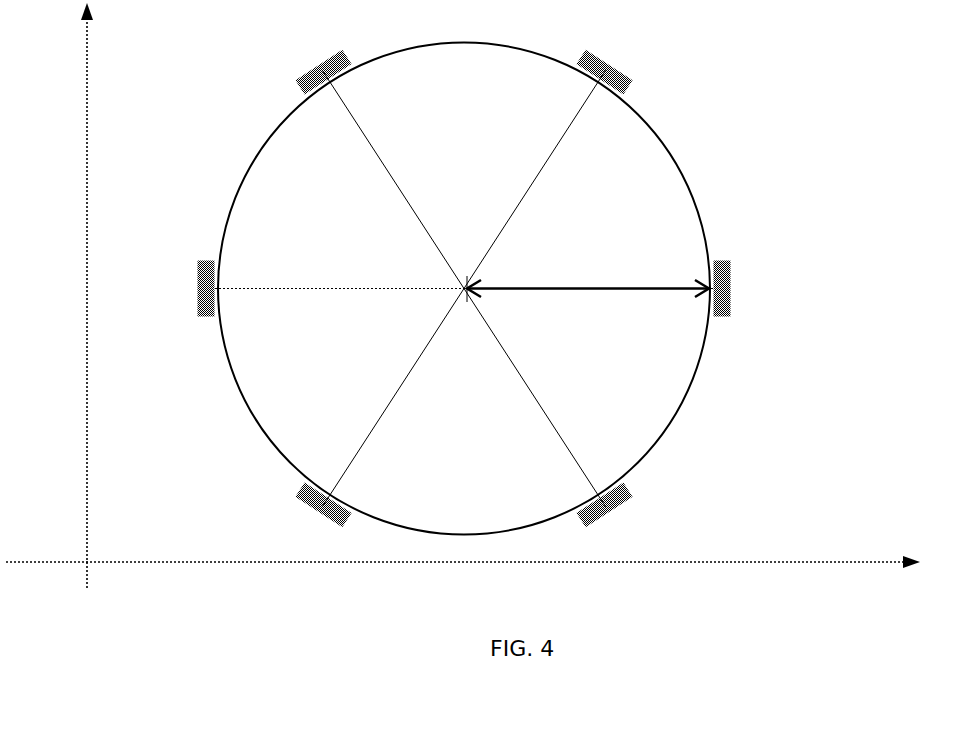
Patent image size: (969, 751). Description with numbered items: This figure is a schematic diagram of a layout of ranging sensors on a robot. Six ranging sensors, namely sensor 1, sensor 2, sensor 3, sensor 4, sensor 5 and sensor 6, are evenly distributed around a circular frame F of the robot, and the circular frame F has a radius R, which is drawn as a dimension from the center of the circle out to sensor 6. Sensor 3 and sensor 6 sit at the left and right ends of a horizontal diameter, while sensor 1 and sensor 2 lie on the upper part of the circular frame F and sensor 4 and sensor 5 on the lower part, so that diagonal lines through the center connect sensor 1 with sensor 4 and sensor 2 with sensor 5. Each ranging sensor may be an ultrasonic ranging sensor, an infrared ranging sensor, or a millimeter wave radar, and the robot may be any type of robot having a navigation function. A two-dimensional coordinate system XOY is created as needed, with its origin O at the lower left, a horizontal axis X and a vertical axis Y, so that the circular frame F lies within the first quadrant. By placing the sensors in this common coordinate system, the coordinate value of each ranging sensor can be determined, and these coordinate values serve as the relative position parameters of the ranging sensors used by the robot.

The ranging sensor 1 is at (609, 65).
The ranging sensor 2 is at (319, 65).
The ranging sensor 3 is at (198, 288).
The ranging sensor 4 is at (319, 512).
The ranging sensor 5 is at (609, 512).
The ranging sensor 6 is at (730, 288).
The circular frame F is at (688, 183).
The radius R is at (588, 282).
The X axis X is at (463, 548).
The Y axis Y is at (103, 295).
The origin O is at (68, 546).